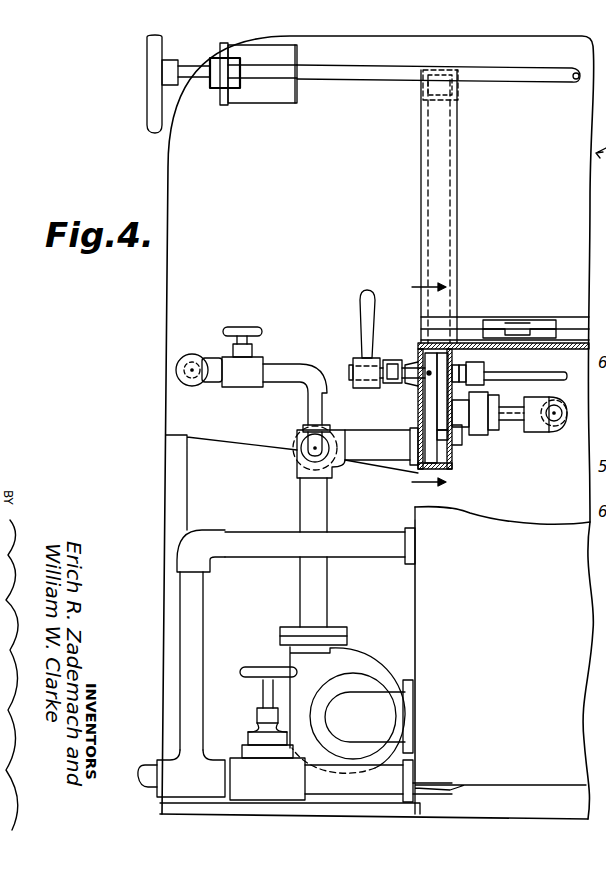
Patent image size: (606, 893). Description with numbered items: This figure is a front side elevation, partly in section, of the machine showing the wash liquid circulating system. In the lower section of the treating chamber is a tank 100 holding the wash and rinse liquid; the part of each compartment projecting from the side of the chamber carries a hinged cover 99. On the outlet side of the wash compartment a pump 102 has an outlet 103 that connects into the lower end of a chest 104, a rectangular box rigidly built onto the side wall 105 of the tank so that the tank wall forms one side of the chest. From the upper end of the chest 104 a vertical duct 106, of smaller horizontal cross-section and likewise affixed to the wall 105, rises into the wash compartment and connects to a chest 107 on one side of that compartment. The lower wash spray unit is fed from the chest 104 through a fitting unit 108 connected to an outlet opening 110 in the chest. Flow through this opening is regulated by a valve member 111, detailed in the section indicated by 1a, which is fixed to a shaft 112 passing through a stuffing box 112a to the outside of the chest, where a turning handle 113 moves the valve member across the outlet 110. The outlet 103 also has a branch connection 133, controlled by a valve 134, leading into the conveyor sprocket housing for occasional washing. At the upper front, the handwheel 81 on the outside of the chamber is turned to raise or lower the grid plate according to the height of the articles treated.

The handwheel 81 is at (158, 100).
The chest 107 is at (425, 95).
The vertical duct 106 is at (432, 190).
The section line 1a is at (432, 389).
The hinged cover 99 is at (573, 335).
The valve 134 is at (236, 327).
The branch connection 133 is at (315, 400).
The turning handle 113 is at (362, 307).
The stuffing box 112a is at (391, 360).
The shaft 112 is at (512, 372).
The valve member 111 is at (440, 400).
The side wall 105 is at (421, 408).
The chest 104 is at (440, 455).
The outlet opening 110 is at (456, 432).
The fitting unit 108 is at (548, 425).
The outlet 103 is at (315, 582).
The pump 102 is at (360, 660).
The tank 100 is at (405, 604).